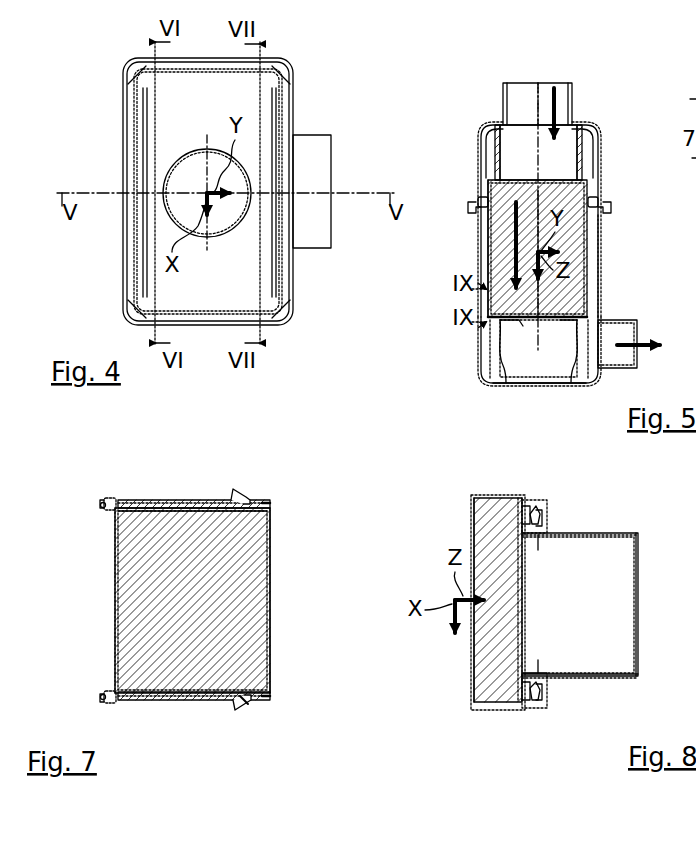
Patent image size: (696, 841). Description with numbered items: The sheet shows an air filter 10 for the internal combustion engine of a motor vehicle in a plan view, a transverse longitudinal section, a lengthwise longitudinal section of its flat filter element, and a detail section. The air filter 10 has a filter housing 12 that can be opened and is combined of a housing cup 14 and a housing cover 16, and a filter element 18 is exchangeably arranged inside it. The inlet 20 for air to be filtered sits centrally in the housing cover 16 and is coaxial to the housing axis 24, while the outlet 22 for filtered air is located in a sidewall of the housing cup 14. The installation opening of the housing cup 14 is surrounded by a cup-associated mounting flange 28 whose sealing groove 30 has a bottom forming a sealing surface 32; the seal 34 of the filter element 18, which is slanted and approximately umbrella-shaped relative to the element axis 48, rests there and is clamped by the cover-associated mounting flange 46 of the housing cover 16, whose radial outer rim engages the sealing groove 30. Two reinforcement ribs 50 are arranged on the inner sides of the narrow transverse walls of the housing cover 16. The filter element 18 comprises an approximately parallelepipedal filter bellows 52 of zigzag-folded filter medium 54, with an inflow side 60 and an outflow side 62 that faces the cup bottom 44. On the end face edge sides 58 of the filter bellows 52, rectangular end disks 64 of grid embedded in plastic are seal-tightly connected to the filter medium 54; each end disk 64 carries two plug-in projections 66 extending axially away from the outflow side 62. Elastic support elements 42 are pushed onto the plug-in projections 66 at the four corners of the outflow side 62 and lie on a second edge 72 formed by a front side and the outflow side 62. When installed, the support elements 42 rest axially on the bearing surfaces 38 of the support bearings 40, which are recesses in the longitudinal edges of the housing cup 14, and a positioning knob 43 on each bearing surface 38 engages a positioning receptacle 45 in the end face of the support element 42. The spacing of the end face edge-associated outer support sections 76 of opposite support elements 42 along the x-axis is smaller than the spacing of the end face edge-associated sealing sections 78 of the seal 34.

In FIG. 4, the air filter 10 is at (66, 80).
In FIG. 5, the air filter 10 is at (478, 74).
In FIG. 4, the filter housing 12 is at (120, 139).
In FIG. 5, the filter housing 12 is at (498, 108).
In FIG. 8, the filter housing 12 is at (642, 678).
In FIG. 5, the housing cup 14 is at (482, 356).
In FIG. 8, the housing cup 14 is at (612, 548).
In FIG. 4, the housing cover 16 is at (143, 84).
In FIG. 5, the housing cover 16 is at (480, 150).
In FIG. 5, the filter element 18 is at (496, 248).
In FIG. 7, the filter element 18 is at (90, 574).
In FIG. 8, the filter element 18 is at (472, 526).
In FIG. 4, the inlet 20 is at (196, 150).
In FIG. 5, the inlet 20 is at (512, 88).
In FIG. 4, the outlet 22 is at (312, 243).
In FIG. 5, the outlet 22 is at (626, 356).
In FIG. 5, the housing axis 24 is at (536, 100).
In FIG. 4, the cup-associated mounting flange 28 is at (124, 286).
In FIG. 5, the cup-associated mounting flange 28 is at (474, 212).
In FIG. 5, the sealing groove 30 is at (606, 210).
In FIG. 5, the sealing surface 32 is at (602, 218).
In FIG. 5, the seal 34 is at (480, 196).
In FIG. 7, the seal 34 is at (244, 708).
In FIG. 5, the bearing surface 38 is at (505, 385).
In FIG. 8, the bearing surface 38 is at (546, 512).
In FIG. 5, the support bearing 40 is at (490, 372).
In FIG. 8, the support bearing 40 is at (574, 538).
In FIG. 5, the support element 42 is at (502, 328).
In FIG. 7, the support element 42 is at (104, 512).
In FIG. 8, the support element 42 is at (524, 510).
In FIG. 8, the positioning knob 43 is at (546, 516).
In FIG. 5, the cup bottom 44 is at (530, 386).
In FIG. 8, the cup bottom 44 is at (640, 606).
In FIG. 7, the positioning receptacle 45 is at (100, 505).
In FIG. 8, the positioning receptacle 45 is at (538, 552).
In FIG. 4, the cover-associated mounting flange 46 is at (283, 300).
In FIG. 5, the cover-associated mounting flange 46 is at (600, 203).
In FIG. 5, the element axis 48 is at (536, 195).
In FIG. 5, the reinforcement rib 50 is at (497, 128).
In FIG. 5, the filter bellows 52 is at (537, 248).
In FIG. 7, the filter bellows 52 is at (286, 604).
In FIG. 5, the filter medium 54 is at (494, 278).
In FIG. 7, the filter medium 54 is at (148, 654).
In FIG. 7, the end face edge side 58 is at (180, 502).
In FIG. 5, the inflow side 60 is at (530, 177).
In FIG. 7, the inflow side 60 is at (272, 560).
In FIG. 5, the outflow side 62 is at (553, 324).
In FIG. 7, the outflow side 62 is at (112, 586).
In FIG. 8, the outflow side 62 is at (528, 602).
In FIG. 7, the end disk 64 is at (272, 500).
In FIG. 8, the end disk 64 is at (482, 672).
In FIG. 7, the plug-in projection 66 is at (120, 501).
In FIG. 8, the plug-in projection 66 is at (533, 506).
In FIG. 5, the second edge 72 is at (486, 314).
In FIG. 7, the end face edge-associated outer support section 76 is at (104, 498).
In FIG. 7, the end face edge-associated sealing section 78 is at (232, 496).